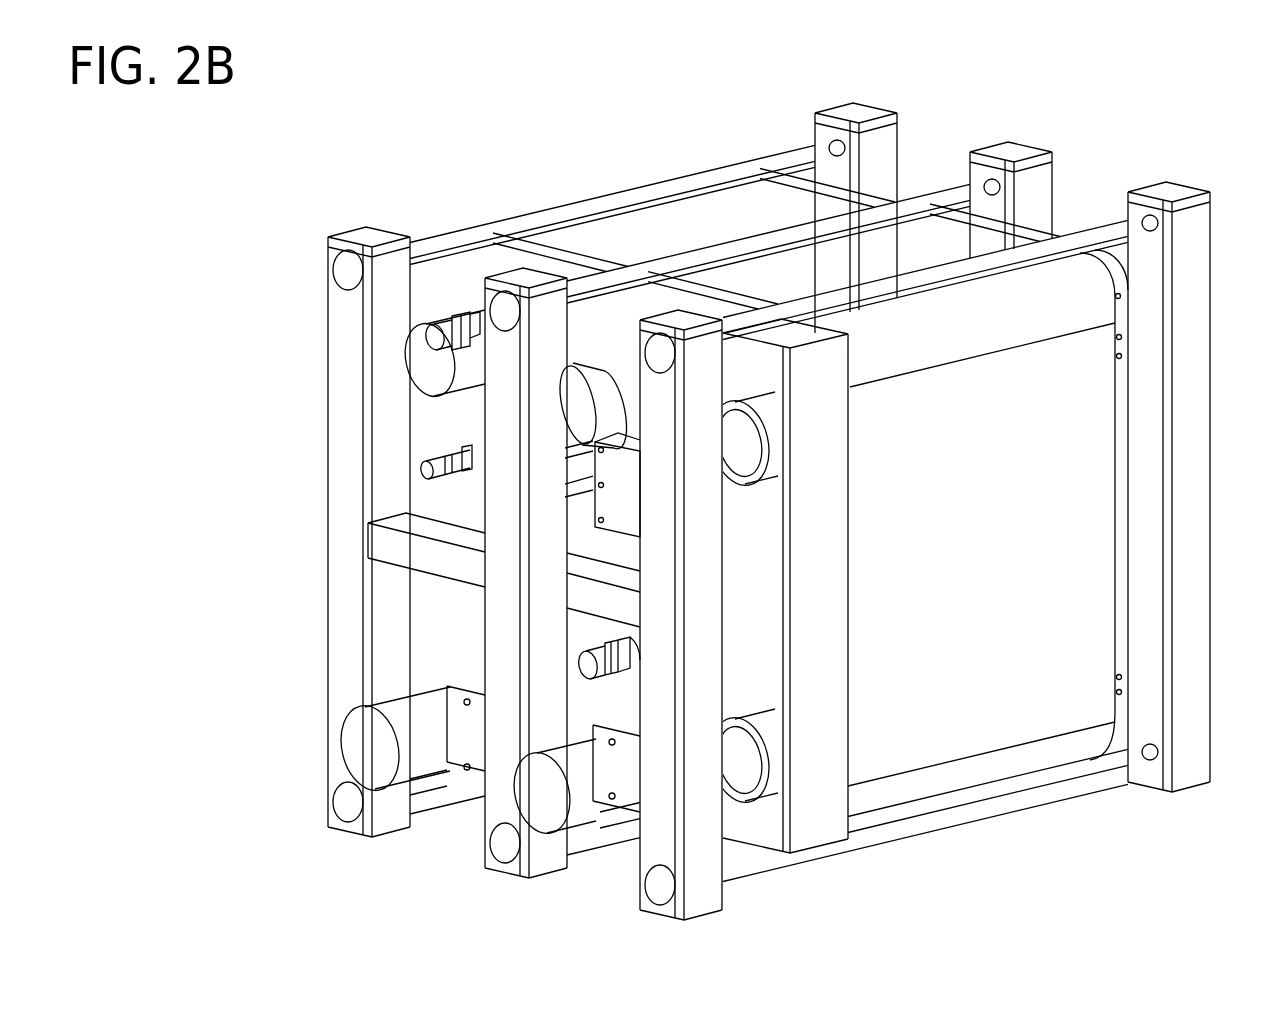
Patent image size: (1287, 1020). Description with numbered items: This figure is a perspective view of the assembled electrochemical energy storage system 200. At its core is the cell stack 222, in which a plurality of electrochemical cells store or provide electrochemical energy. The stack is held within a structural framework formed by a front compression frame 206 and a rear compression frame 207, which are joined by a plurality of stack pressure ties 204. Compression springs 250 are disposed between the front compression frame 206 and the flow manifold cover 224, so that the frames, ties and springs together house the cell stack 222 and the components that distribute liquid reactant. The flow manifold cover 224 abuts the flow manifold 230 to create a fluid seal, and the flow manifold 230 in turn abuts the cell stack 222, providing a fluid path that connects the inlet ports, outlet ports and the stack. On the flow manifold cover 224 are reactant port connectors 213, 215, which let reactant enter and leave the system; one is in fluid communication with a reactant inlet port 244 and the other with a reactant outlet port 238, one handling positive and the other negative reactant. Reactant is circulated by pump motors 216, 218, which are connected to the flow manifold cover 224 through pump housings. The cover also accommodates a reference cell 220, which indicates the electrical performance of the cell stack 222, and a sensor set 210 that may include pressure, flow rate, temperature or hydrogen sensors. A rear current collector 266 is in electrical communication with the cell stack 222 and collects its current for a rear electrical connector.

The electrochemical energy storage system 200 is at (691, 537).
The stack pressure ties 204 is at (943, 277).
The front compression frame 206 is at (415, 527).
The rear compression frame 207 is at (1187, 400).
The sensor set 210 is at (425, 463).
The reactant port connector 213 is at (577, 662).
The reactant port connector 215 is at (437, 323).
The pump motor 216 is at (413, 747).
The pump motor 218 is at (585, 795).
The reference cell 220 is at (630, 440).
The cell stack 222 is at (1010, 572).
The flow manifold cover 224 is at (757, 368).
The flow manifold 230 is at (483, 253).
The reactant outlet port 238 is at (474, 318).
The reactant inlet port 244 is at (625, 643).
The compression springs 250 is at (750, 735).
The rear current collector 266 is at (1115, 487).